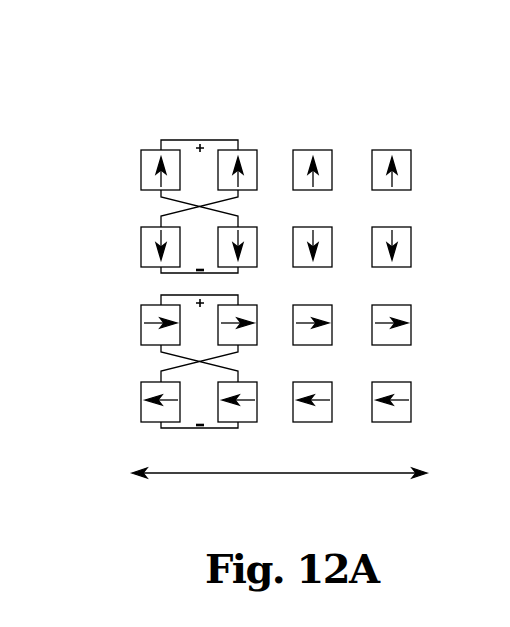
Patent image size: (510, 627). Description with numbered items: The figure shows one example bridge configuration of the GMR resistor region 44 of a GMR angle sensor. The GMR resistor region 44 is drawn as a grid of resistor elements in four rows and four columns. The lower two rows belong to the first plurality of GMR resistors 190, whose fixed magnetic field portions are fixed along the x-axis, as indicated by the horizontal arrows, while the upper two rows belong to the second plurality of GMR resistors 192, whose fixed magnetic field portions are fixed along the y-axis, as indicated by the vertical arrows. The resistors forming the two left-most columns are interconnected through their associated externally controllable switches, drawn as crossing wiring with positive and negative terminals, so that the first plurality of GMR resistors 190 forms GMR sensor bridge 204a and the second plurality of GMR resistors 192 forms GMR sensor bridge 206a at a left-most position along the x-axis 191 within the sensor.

The GMR resistor region 44 is at (267, 233).
The second plurality of GMR resistors 192 is at (425, 150).
The first plurality of GMR resistors 190 is at (425, 305).
The GMR sensor bridge 206a is at (140, 211).
The GMR sensor bridge 204a is at (140, 366).
The x-axis 191 is at (257, 473).